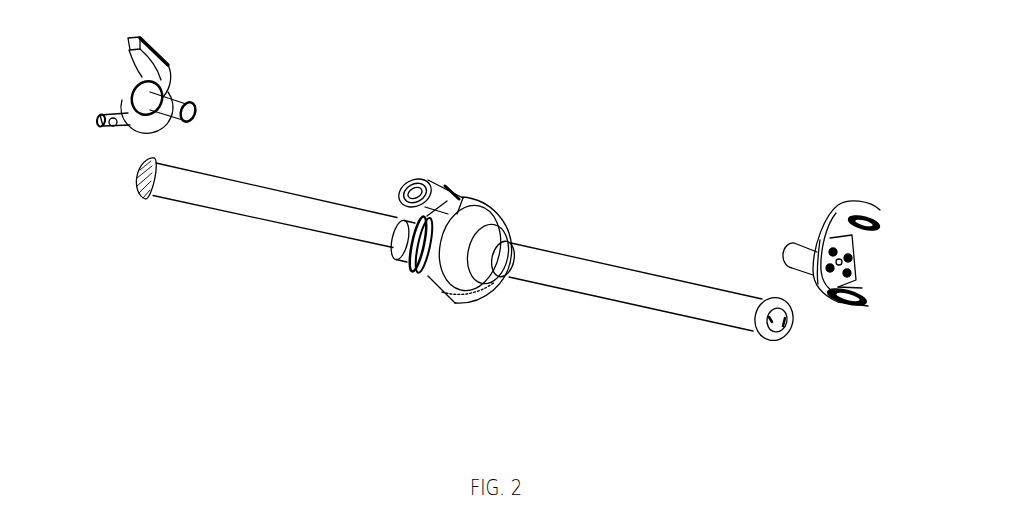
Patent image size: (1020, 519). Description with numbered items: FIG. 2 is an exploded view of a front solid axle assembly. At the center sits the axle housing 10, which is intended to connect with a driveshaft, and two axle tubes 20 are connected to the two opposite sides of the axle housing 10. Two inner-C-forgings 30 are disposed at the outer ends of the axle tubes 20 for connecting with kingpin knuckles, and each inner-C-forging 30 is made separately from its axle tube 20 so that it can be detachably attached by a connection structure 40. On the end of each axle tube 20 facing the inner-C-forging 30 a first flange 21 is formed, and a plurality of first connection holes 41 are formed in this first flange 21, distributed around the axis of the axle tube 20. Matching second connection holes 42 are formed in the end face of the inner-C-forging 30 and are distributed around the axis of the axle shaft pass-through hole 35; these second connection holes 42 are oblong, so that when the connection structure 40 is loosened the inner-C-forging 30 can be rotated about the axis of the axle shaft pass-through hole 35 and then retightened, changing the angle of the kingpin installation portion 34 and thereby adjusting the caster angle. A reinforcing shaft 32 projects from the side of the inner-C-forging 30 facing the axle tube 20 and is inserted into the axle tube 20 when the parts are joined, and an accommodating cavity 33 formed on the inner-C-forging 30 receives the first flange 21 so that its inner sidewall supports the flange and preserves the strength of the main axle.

The axle housing 10 is at (462, 187).
The axle tube 20 is at (263, 197).
The first flange 21 is at (134, 171).
The inner-C-forging 30 is at (505, 191).
The reinforcing shaft 32 is at (190, 104).
The accommodating cavity 33 is at (128, 81).
The kingpin installation portion 34 is at (870, 226).
The axle shaft pass-through hole 35 is at (857, 263).
The connection structure 40 is at (767, 197).
The first connection hole 41 is at (766, 298).
The second connection hole 42 is at (824, 236).